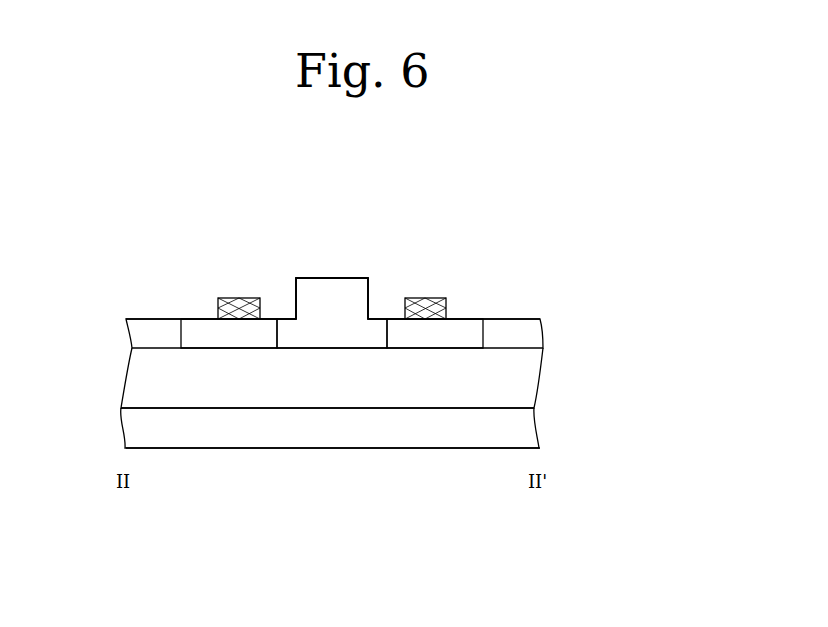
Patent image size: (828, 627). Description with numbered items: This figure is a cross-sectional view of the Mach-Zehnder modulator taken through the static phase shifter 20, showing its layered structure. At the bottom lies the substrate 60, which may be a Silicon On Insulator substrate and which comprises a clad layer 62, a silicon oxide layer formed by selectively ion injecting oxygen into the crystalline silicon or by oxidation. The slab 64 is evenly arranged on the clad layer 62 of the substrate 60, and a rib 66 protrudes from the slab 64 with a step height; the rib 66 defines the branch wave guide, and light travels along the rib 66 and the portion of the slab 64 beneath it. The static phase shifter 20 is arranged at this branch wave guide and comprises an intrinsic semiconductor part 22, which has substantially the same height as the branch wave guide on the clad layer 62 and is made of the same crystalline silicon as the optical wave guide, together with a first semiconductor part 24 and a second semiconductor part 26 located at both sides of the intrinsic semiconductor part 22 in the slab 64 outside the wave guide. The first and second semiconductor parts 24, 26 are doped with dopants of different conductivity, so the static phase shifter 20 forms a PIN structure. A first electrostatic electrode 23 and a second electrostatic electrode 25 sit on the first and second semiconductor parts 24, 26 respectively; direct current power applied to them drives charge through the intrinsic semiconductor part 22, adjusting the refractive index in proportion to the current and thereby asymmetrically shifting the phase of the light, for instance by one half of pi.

The static phase shifter 20 is at (523, 245).
The intrinsic semiconductor part 22 is at (337, 288).
The first electrostatic electrode 23 is at (239, 305).
The first semiconductor part 24 is at (197, 327).
The second electrostatic electrode 25 is at (427, 305).
The second semiconductor part 26 is at (467, 330).
The rib 66 is at (376, 272).
The slab 64 is at (528, 334).
The clad layer 62 is at (528, 382).
The substrate 60 is at (528, 430).